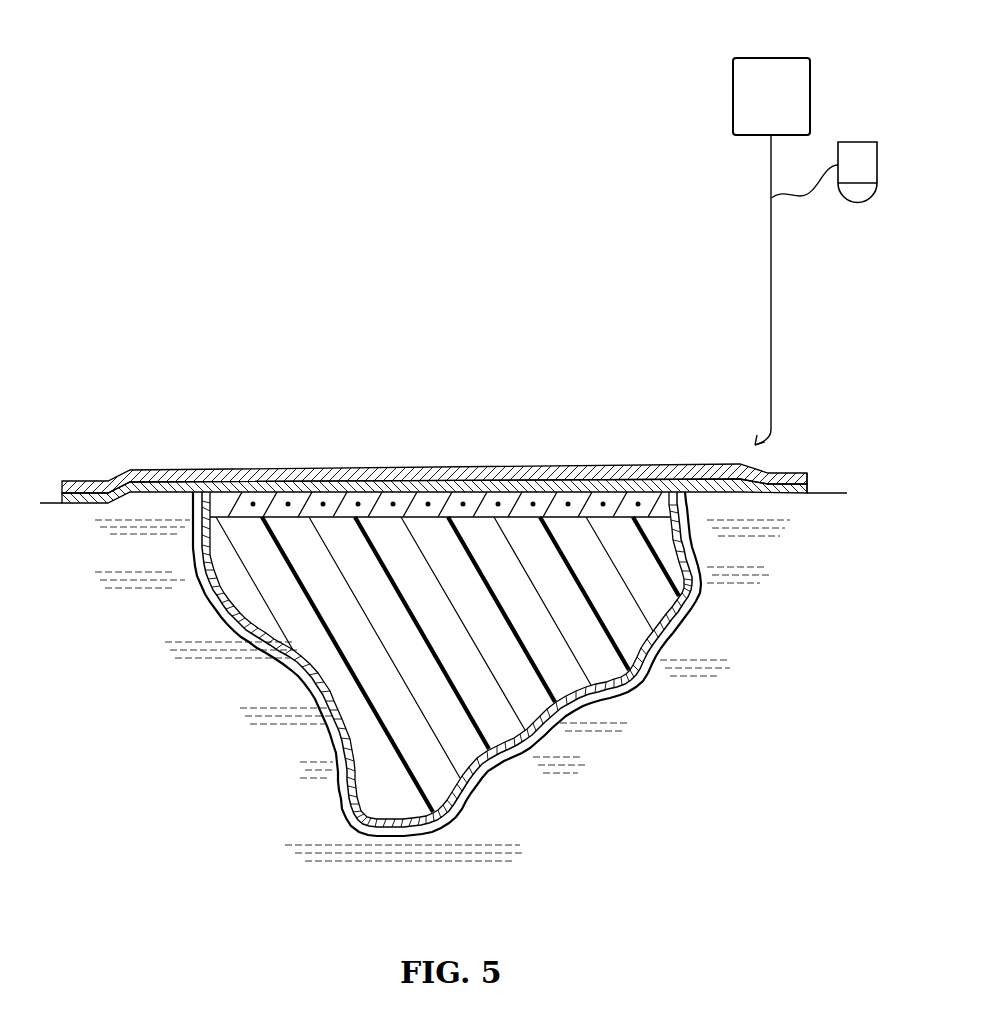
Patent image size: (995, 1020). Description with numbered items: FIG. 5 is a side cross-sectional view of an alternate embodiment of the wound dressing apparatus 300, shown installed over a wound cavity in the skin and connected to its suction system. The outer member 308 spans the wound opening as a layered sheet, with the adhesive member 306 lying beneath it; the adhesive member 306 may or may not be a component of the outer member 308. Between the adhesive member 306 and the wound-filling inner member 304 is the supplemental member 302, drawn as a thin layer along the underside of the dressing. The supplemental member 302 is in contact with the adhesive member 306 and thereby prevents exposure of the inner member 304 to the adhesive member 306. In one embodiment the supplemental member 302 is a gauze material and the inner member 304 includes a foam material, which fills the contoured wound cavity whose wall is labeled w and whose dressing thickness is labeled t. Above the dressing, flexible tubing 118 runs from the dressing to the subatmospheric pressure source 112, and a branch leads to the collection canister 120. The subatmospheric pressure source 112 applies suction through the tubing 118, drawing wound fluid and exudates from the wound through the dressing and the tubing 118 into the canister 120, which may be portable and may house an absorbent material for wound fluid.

The subatmospheric pressure source 112 is at (773, 72).
The collection canister 120 is at (856, 142).
The flexible tubing 118 is at (772, 292).
The wound dressing apparatus 300 is at (528, 425).
The supplemental member 302 is at (360, 492).
The inner member 304 is at (557, 675).
The adhesive member 306 is at (300, 482).
The outer member 308 is at (670, 464).
The liner wall w is at (693, 620).
The plate thickness t is at (776, 500).